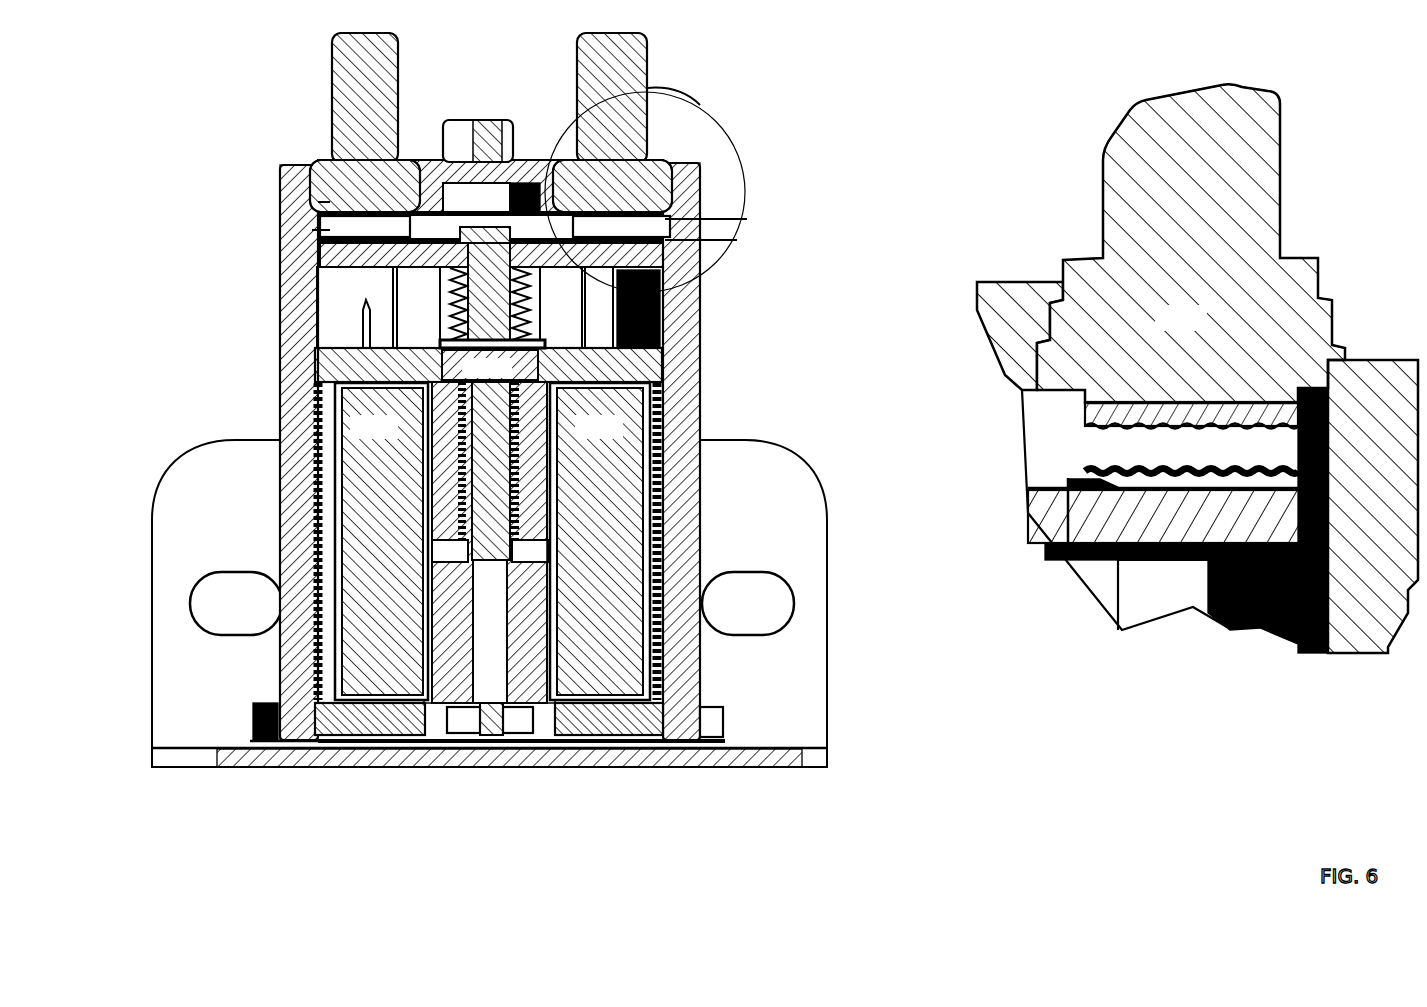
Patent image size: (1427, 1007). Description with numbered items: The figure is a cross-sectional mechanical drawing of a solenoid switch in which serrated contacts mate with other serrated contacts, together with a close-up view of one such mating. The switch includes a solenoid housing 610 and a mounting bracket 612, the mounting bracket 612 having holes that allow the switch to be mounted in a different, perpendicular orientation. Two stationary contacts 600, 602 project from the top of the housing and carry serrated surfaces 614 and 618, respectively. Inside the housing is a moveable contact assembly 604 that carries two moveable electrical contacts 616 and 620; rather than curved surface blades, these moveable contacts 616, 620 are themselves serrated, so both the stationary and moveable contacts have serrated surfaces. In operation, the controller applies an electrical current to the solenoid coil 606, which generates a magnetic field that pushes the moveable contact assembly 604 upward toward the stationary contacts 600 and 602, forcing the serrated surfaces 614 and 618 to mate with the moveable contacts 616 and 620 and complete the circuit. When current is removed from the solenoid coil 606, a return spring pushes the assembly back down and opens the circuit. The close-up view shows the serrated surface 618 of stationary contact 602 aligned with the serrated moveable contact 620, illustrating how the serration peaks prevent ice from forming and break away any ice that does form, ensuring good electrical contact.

The stationary contact 600 is at (365, 135).
The stationary contact 602 is at (945, 218).
The moveable contact assembly 604 is at (488, 481).
The solenoid coil 606 is at (487, 541).
The solenoid housing 610 is at (692, 388).
The mounting bracket 612 is at (489, 603).
The serrated surface 614 is at (316, 202).
The moveable electrical contact 616 is at (310, 230).
The serrated surface 618 is at (747, 219).
The moveable electrical contact 620 is at (737, 240).